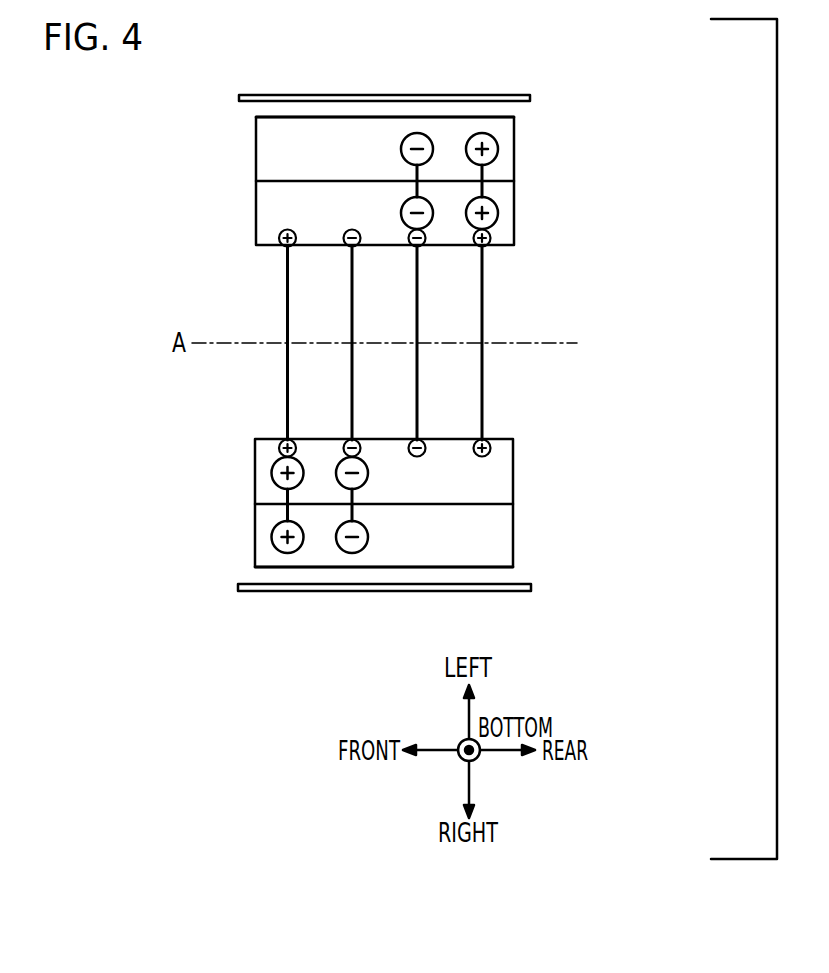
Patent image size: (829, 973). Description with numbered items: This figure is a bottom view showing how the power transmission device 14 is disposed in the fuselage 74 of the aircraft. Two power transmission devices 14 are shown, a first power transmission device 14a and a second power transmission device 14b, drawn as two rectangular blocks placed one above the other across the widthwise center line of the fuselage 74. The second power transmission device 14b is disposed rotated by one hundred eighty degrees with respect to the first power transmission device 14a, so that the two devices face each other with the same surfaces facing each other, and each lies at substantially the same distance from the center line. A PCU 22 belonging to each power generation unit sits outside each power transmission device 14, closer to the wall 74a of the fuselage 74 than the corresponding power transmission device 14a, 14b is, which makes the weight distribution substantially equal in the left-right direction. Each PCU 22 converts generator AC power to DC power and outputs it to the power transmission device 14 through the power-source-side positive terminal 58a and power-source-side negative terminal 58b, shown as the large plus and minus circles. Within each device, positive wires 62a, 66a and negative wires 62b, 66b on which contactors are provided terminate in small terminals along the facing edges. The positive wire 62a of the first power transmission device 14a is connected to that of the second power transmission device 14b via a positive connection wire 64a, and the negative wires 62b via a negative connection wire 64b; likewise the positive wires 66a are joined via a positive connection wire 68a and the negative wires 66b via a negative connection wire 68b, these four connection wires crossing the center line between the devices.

The fuselage 74 is at (360, 69).
The wall 74a is at (498, 95).
The power control unit 22 is at (401, 117).
The power transmission device 14 is at (386, 342).
The first power transmission device 14a is at (235, 203).
The second power transmission device 14b is at (533, 489).
The power-source-side positive terminal 58a is at (498, 213).
The power-source-side negative terminal 58b is at (407, 200).
The positive wire 66a is at (288, 229).
The negative wire 66b is at (353, 229).
The positive wire 62a is at (492, 240).
The negative wire 62b is at (426, 234).
The positive connection wire 68a is at (287, 288).
The negative connection wire 68b is at (352, 328).
The positive connection wire 64a is at (482, 312).
The negative connection wire 64b is at (417, 376).